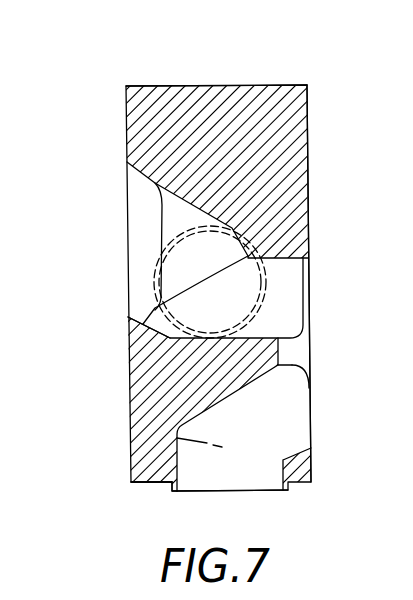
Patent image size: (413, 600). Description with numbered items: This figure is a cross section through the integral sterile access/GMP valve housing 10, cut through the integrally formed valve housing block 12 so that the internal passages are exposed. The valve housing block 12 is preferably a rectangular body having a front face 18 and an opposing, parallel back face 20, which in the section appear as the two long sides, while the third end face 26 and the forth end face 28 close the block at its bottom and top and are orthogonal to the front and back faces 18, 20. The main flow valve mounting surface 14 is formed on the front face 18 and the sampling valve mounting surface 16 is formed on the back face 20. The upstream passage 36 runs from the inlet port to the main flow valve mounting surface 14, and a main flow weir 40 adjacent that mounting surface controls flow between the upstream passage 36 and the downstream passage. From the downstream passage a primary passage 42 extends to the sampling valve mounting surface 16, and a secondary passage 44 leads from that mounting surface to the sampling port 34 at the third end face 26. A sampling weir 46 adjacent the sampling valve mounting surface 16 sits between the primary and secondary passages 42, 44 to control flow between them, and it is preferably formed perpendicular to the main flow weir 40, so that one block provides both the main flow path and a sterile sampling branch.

The integral sterile access/GMP valve housing 10 is at (137, 52).
The valve housing block 12 is at (135, 86).
The main flow valve mounting surface 14 is at (127, 152).
The sampling valve mounting surface 16 is at (311, 390).
The front face 18 is at (129, 374).
The back face 20 is at (309, 138).
The third end face 26 is at (142, 482).
The forth end face 28 is at (210, 85).
The sampling port 34 is at (172, 489).
The upstream passage 36 is at (152, 238).
The main flow weir 40 is at (160, 208).
The primary passage 42 is at (279, 293).
The secondary passage 44 is at (266, 418).
The sampling weir 46 is at (286, 350).